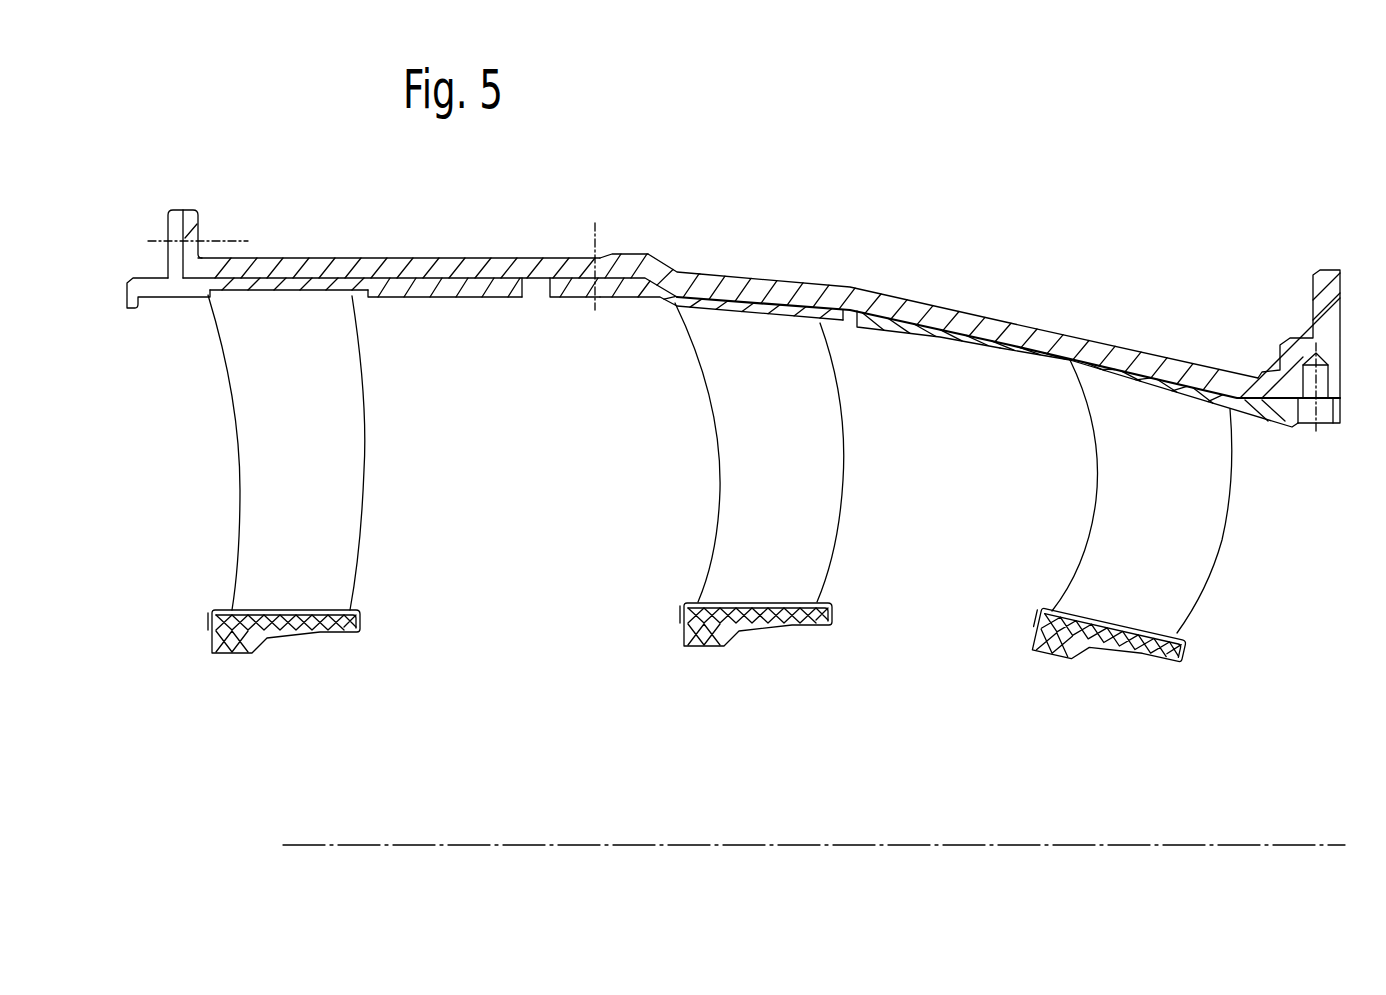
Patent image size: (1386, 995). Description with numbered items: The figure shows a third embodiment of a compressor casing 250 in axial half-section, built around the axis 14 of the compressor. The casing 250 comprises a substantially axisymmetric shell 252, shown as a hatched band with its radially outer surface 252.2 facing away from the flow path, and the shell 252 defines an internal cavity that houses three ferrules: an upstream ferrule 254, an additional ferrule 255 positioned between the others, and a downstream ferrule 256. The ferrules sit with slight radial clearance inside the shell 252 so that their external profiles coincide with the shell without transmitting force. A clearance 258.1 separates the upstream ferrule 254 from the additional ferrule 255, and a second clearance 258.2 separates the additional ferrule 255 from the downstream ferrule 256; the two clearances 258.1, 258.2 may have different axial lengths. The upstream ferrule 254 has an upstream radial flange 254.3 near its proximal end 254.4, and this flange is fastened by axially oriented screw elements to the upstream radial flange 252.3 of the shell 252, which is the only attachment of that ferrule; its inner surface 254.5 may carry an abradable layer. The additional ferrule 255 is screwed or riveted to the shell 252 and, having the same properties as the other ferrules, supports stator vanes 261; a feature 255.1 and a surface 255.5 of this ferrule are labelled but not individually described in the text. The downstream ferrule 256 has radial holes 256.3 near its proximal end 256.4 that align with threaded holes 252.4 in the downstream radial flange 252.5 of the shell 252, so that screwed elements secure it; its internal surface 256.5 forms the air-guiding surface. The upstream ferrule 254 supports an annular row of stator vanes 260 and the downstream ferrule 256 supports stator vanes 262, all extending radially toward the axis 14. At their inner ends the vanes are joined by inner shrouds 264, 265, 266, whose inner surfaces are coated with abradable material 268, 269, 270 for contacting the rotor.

The casing 250 is at (1024, 129).
The shell 252 is at (1123, 355).
The radially outer surface of the shell 252.2 is at (688, 265).
The upstream radial flange of the shell 252.3 is at (190, 224).
The threaded holes 252.4 is at (1303, 368).
The downstream radial flange of the shell 252.5 is at (1317, 312).
The upstream ferrule 254 is at (385, 294).
The upstream radial flange of the upstream ferrule 254.3 is at (182, 265).
The proximal end of the upstream ferrule 254.4 is at (132, 334).
The inner surface of the upstream ferrule 254.5 is at (405, 296).
The additional ferrule 255 is at (628, 288).
The liner attachment portion 255.1 is at (620, 265).
The liner front end 255.5 is at (573, 300).
The downstream ferrule 256 is at (1055, 358).
The radial holes 256.3 is at (1308, 412).
The proximal end of the downstream ferrule 256.4 is at (1338, 441).
The internal surface of the downstream ferrule 256.5 is at (1047, 360).
The clearance 258.1 is at (540, 300).
The clearance 258.2 is at (852, 328).
The stator vanes 260 is at (328, 485).
The second guide vane 261 is at (801, 485).
The stator vanes 262 is at (1175, 512).
The inner shroud 264 is at (287, 613).
The second vane platform 265 is at (759, 605).
The inner shroud 266 is at (1118, 628).
The abradable material 268 is at (293, 632).
The second platform seal 269 is at (765, 624).
The abradable material 270 is at (1114, 648).
The axis 14 is at (725, 845).